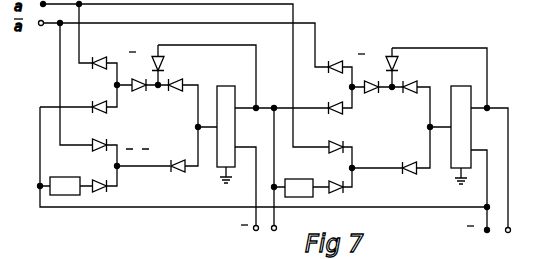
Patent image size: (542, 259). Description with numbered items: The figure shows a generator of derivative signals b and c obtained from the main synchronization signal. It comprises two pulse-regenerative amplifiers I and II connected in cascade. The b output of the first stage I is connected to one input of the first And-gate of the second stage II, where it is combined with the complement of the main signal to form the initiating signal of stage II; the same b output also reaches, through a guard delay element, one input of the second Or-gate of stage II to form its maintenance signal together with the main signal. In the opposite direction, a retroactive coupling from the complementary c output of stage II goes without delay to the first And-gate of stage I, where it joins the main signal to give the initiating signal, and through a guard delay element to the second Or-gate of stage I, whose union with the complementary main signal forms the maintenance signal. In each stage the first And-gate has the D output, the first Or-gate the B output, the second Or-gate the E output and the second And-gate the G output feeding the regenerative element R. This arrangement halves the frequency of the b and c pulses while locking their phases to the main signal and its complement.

The first pulse-regenerative amplifier stage I is at (184, 122).
The second pulse-regenerative amplifier stage II is at (404, 144).